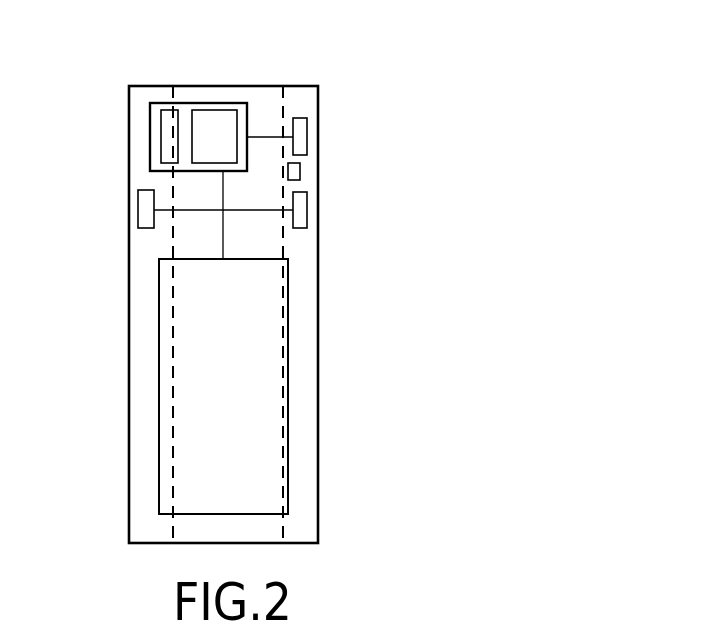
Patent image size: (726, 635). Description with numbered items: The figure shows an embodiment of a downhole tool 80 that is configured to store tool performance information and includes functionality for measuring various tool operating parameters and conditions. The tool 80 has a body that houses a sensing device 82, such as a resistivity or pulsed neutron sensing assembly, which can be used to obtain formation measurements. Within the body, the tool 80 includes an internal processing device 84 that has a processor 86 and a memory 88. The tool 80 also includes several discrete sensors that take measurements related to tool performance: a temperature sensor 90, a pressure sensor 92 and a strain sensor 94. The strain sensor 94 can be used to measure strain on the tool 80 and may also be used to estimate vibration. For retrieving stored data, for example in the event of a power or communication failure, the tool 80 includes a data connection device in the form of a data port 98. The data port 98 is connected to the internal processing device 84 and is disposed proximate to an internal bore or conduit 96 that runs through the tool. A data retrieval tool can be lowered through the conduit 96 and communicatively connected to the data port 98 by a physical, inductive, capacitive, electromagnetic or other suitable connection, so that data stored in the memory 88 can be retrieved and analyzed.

The downhole tool 80 is at (318, 92).
The sensing device 82 is at (260, 402).
The internal processing device 84 is at (190, 101).
The processor 86 is at (168, 137).
The memory 88 is at (225, 117).
The temperature sensor 90 is at (300, 137).
The pressure sensor 92 is at (300, 210).
The strain sensor 94 is at (145, 210).
The internal bore or conduit 96 is at (282, 243).
The data port 98 is at (300, 168).